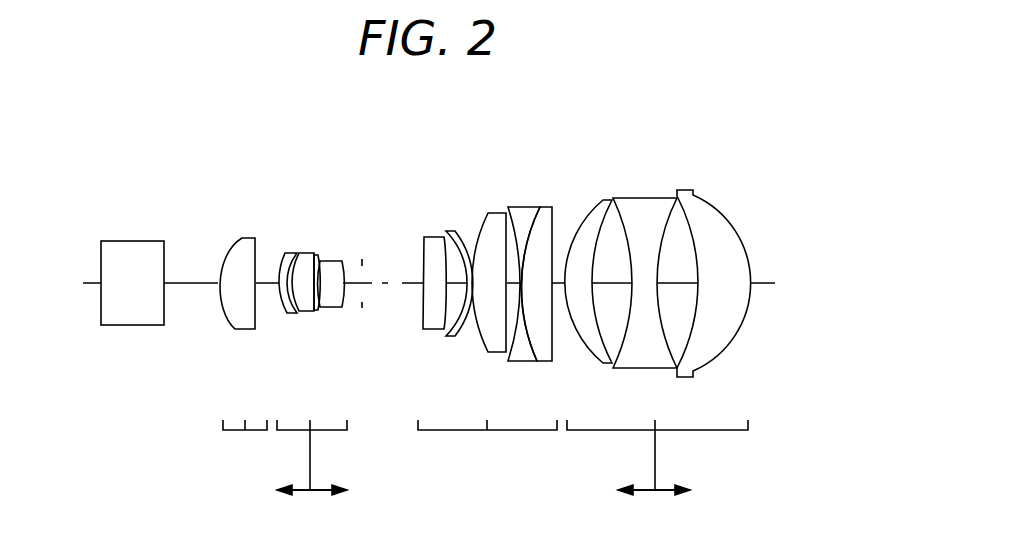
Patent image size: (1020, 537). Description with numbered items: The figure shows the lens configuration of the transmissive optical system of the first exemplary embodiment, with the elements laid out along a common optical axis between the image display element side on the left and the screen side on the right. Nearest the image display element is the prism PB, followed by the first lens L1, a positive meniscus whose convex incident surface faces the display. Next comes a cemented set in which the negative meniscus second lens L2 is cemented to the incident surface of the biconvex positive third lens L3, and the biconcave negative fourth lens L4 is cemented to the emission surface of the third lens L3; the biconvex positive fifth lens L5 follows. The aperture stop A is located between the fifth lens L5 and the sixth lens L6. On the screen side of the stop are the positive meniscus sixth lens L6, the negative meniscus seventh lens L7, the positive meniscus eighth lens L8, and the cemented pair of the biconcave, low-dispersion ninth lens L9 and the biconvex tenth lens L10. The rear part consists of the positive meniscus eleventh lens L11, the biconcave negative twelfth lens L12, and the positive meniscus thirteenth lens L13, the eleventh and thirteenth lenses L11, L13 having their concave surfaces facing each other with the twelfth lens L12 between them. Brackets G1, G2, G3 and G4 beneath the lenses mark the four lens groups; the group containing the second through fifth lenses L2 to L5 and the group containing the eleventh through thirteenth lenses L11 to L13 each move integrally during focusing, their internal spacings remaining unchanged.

The prism PB is at (135, 246).
The first lens L1 is at (245, 240).
The second lens L2 is at (285, 256).
The third lens L3 is at (302, 253).
The fourth lens L4 is at (318, 258).
The fifth lens L5 is at (335, 262).
The aperture stop A is at (362, 258).
The sixth lens L6 is at (432, 238).
The seventh lens L7 is at (453, 232).
The eighth lens L8 is at (495, 213).
The ninth lens L9 is at (523, 207).
The tenth lens L10 is at (545, 207).
The eleventh lens L11 is at (606, 200).
The twelfth lens L12 is at (650, 198).
The thirteenth lens L13 is at (687, 190).
The first lens group (positive) G1 is at (657, 439).
The second lens group (positive) G2 is at (487, 406).
The third lens group (positive) G3 is at (312, 439).
The fourth lens group (positive) G4 is at (243, 406).